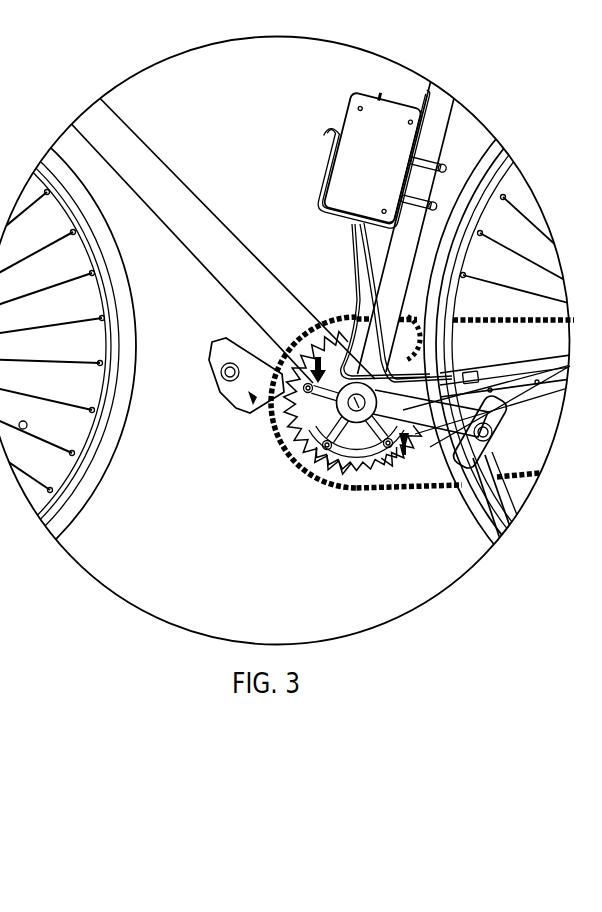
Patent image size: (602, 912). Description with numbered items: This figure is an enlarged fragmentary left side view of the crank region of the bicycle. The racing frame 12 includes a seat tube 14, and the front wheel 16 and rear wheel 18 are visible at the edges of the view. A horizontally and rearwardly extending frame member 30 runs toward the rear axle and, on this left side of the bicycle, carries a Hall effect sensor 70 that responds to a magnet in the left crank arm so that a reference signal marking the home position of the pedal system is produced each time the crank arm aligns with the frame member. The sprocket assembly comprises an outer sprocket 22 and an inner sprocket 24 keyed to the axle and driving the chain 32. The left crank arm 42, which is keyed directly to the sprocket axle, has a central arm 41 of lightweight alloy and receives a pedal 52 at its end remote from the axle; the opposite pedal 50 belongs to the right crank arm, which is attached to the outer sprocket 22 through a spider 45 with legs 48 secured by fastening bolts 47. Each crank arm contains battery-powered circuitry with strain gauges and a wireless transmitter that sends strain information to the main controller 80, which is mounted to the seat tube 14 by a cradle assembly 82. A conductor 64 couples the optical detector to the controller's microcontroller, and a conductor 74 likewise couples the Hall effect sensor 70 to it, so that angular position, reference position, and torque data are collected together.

The racing frame 12 is at (462, 137).
The seat tube 14 is at (443, 120).
The front wheel 16 is at (85, 488).
The rear wheel 18 is at (485, 520).
The outer sprocket 22 is at (333, 487).
The inner sprocket 24 is at (290, 460).
The frame member 30 is at (548, 362).
The chain 32 is at (382, 483).
The central arm 41 is at (390, 482).
The crank arm 42 is at (407, 458).
The spider 45 is at (317, 364).
The fastening bolts 47 is at (285, 432).
The legs 48 is at (352, 495).
The pedal 50 is at (233, 403).
The pedal 52 is at (522, 473).
The conductor 64 is at (338, 295).
The Hall effect sensor 70 is at (555, 395).
The conductor 74 is at (355, 267).
The main controller 80 is at (353, 122).
The cradle assembly 82 is at (333, 181).